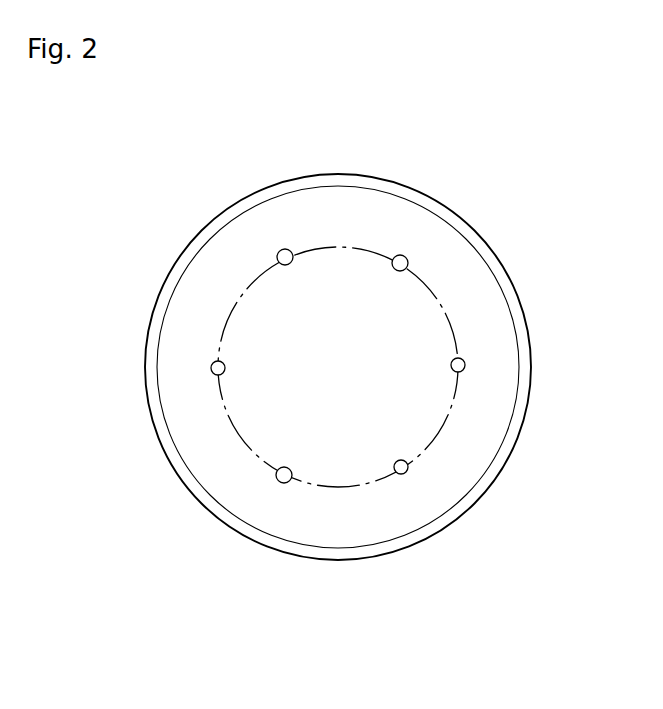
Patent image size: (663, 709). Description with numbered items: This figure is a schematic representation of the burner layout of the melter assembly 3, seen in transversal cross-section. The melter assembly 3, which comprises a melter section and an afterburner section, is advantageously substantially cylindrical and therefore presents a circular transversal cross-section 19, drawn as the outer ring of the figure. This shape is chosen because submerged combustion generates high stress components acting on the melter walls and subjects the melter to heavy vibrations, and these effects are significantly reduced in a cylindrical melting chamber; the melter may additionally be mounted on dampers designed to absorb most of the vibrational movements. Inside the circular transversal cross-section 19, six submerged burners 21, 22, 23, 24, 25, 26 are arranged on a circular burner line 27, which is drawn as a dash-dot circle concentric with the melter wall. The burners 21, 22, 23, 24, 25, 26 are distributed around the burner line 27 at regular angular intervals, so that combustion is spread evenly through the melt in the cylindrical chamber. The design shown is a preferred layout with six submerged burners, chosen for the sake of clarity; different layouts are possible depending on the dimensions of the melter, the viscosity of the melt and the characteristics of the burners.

The melter assembly 3 is at (138, 593).
The circular transversal cross-section 19 is at (513, 285).
The burner 21 is at (211, 365).
The burner 22 is at (279, 250).
The burner 23 is at (407, 257).
The burner 24 is at (466, 365).
The burner 25 is at (408, 466).
The burner 26 is at (281, 483).
The circular burner line 27 is at (453, 408).